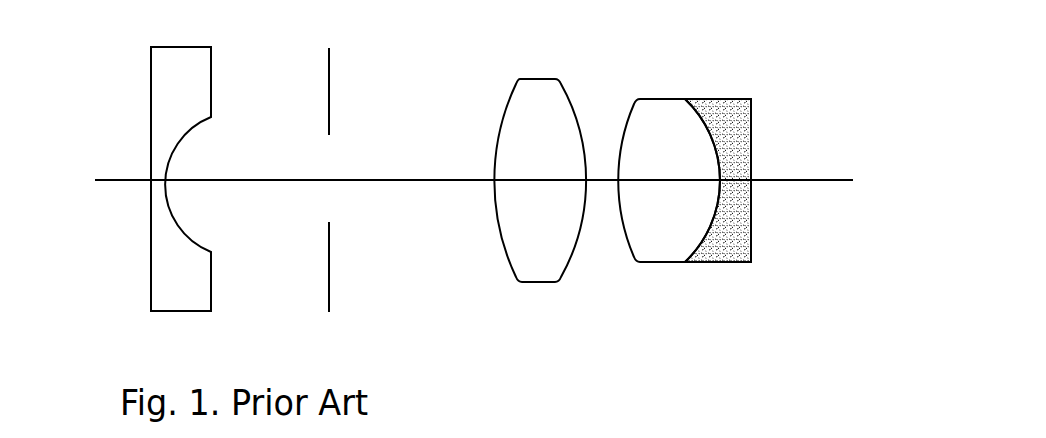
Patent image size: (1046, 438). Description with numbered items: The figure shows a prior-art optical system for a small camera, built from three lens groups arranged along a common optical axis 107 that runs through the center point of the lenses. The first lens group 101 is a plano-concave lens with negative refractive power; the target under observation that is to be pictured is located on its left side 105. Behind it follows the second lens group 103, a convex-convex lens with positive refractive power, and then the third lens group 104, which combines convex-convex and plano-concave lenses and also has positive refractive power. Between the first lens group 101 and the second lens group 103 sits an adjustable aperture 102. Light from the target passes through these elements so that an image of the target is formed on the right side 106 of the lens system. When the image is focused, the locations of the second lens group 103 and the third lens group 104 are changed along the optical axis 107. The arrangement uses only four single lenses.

The first lens group 101 is at (173, 47).
The adjustable aperture 102 is at (329, 68).
The second lens group 103 is at (533, 78).
The third lens group 104 is at (665, 98).
The left side 105 is at (451, 182).
The right side 106 is at (800, 180).
The optical axis 107 is at (800, 180).